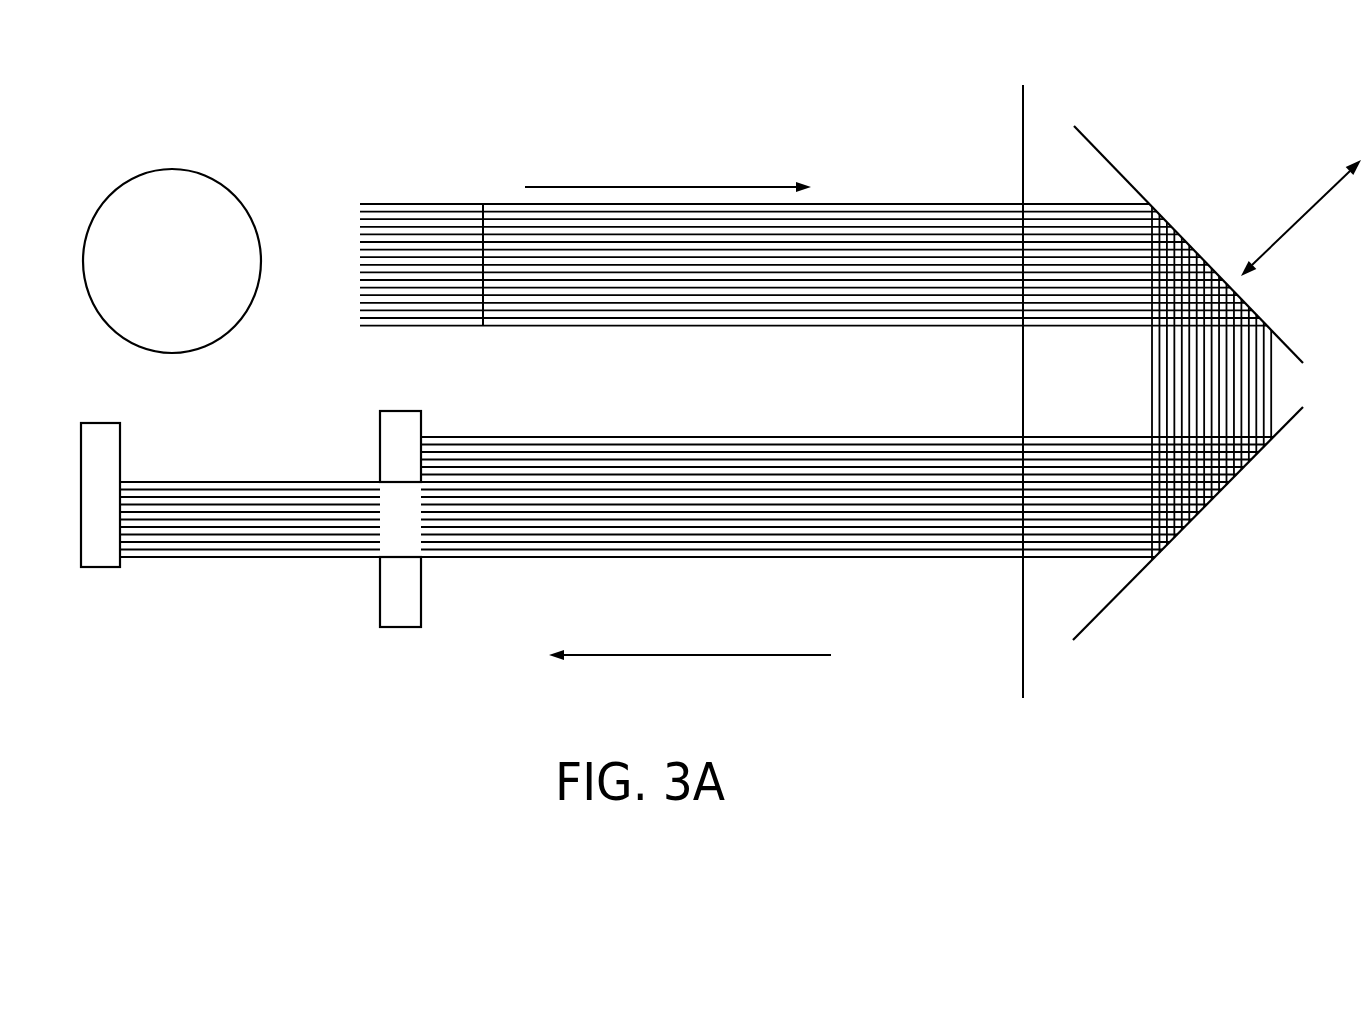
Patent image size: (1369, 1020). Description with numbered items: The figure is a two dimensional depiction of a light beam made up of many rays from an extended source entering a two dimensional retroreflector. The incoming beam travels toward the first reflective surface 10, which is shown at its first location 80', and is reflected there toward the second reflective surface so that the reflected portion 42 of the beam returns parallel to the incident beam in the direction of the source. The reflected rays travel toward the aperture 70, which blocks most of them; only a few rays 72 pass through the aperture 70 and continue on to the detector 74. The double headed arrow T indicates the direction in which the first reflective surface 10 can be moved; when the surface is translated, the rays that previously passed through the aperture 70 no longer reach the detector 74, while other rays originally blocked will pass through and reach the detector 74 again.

The first reflective surface 10 is at (1122, 175).
The reflected portion of the light ray 42 is at (905, 552).
The aperture 70 is at (393, 619).
The rays passing through the aperture 72 is at (240, 550).
The detector 74 is at (91, 560).
The first location of the reflective surface 80' is at (1186, 338).
The arrow indicating movement of the first reflective surface T is at (1301, 218).